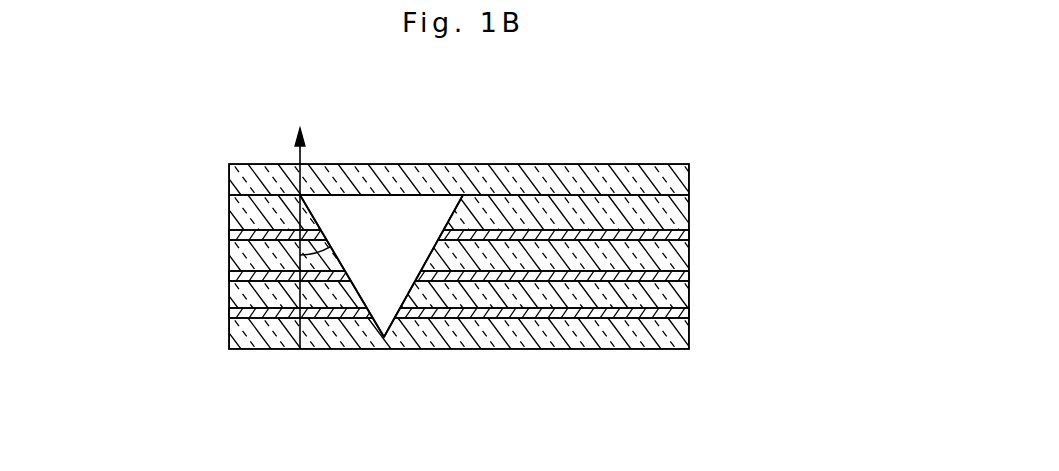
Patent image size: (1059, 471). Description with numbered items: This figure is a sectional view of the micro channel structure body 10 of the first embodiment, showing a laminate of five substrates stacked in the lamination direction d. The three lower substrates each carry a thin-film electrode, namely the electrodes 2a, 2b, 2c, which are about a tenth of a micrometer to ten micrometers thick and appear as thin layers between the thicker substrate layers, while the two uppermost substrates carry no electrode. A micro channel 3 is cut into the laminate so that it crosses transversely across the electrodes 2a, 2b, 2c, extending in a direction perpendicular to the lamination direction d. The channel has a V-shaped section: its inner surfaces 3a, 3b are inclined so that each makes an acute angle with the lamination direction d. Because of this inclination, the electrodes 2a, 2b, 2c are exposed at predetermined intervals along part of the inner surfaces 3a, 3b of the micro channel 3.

The micro channel structure body 10 is at (540, 105).
The electrode 2a is at (238, 313).
The electrode 2b is at (240, 277).
The electrode 2c is at (240, 235).
The micro channel 3 is at (387, 298).
The inner surface 3a is at (313, 213).
The inner surface 3b is at (452, 217).
The lamination direction d is at (287, 235).